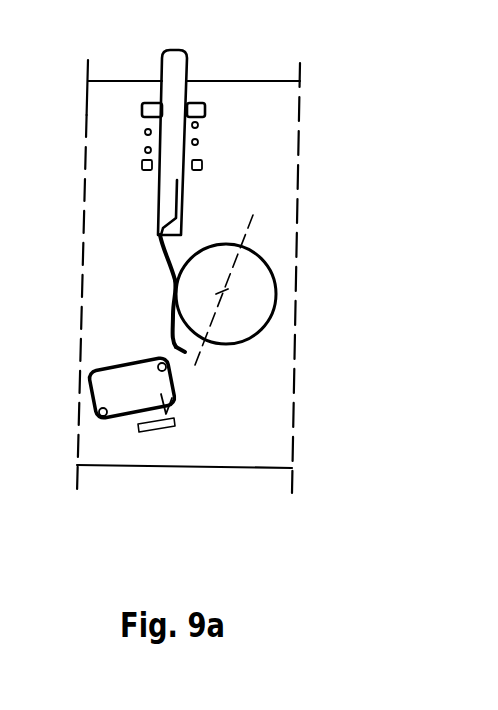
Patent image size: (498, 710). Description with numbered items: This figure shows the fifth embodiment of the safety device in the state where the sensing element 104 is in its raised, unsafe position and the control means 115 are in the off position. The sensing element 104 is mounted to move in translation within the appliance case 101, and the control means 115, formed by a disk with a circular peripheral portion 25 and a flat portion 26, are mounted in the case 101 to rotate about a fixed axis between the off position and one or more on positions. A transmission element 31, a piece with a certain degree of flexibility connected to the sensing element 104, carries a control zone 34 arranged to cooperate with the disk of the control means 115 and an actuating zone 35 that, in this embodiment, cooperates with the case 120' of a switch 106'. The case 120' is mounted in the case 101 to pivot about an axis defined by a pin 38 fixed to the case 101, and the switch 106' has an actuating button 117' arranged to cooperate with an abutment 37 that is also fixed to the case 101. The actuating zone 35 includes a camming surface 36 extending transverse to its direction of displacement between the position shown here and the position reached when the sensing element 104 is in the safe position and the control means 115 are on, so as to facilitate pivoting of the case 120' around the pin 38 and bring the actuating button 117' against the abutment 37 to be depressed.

The case 101 is at (255, 142).
The sensing element 104 is at (199, 199).
The control means 115 is at (247, 270).
The circular peripheral portion 25 is at (183, 253).
The flat portion 26 is at (180, 302).
The transmission element 31 is at (154, 261).
The control zone 34 is at (173, 287).
The actuating zone 35 is at (157, 334).
The camming surface 36 is at (162, 350).
The switch 106' is at (98, 389).
The case of switch 120' is at (268, 406).
The pin 38 is at (107, 420).
The abutment 37 is at (150, 432).
The actuating button 117' is at (209, 462).